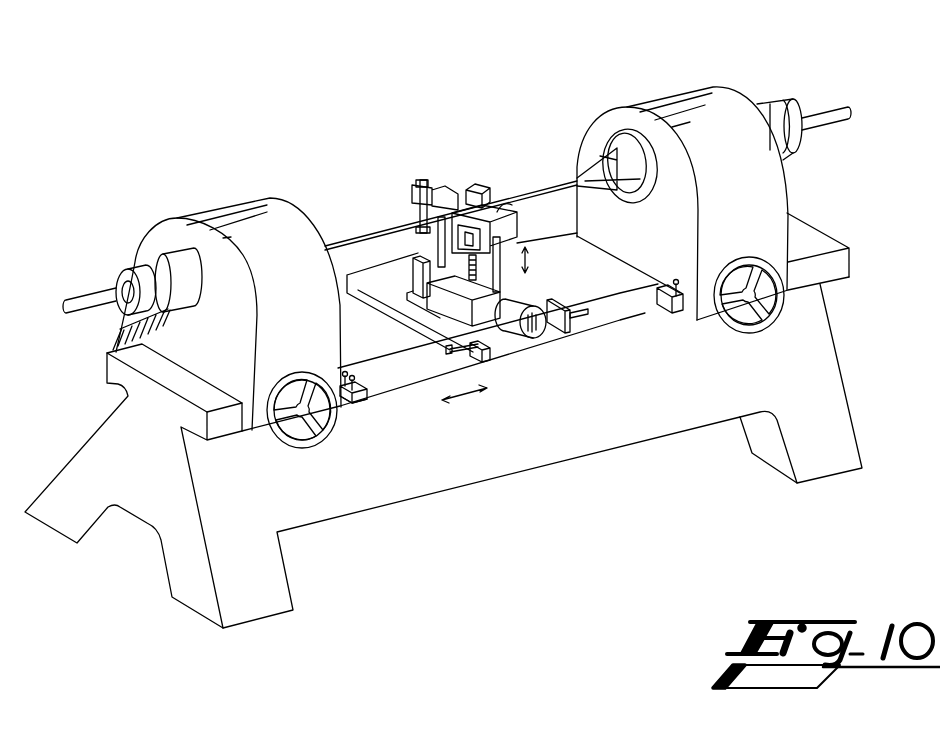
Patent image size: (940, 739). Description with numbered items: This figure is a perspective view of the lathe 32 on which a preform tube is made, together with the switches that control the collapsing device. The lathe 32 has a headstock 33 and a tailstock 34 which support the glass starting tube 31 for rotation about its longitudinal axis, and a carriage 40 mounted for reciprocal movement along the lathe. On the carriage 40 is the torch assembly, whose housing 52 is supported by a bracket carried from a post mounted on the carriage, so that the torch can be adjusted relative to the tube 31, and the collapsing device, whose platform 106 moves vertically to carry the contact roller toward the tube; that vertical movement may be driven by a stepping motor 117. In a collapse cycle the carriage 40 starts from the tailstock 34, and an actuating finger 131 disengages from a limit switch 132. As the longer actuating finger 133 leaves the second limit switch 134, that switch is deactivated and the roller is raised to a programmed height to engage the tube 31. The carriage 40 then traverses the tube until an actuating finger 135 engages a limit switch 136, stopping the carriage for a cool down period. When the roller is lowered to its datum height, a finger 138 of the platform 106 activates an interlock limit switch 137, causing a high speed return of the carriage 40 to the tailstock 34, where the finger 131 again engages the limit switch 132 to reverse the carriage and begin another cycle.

The glass starting tube 31 is at (333, 240).
The lathe 32 is at (428, 507).
The headstock 33 is at (713, 92).
The tailstock 34 is at (202, 219).
The carriage 40 is at (493, 360).
The housing 52 is at (481, 193).
The platform 106 is at (527, 243).
The stepping motor 117 is at (535, 334).
The actuating finger 131 is at (470, 355).
The limit switch 132 is at (370, 384).
The longer actuating finger 133 is at (450, 348).
The second limit switch 134 is at (348, 368).
The actuating finger 135 is at (582, 321).
The limit switch 136 is at (670, 308).
The interlock limit switch 137 is at (410, 272).
The finger 138 is at (415, 211).